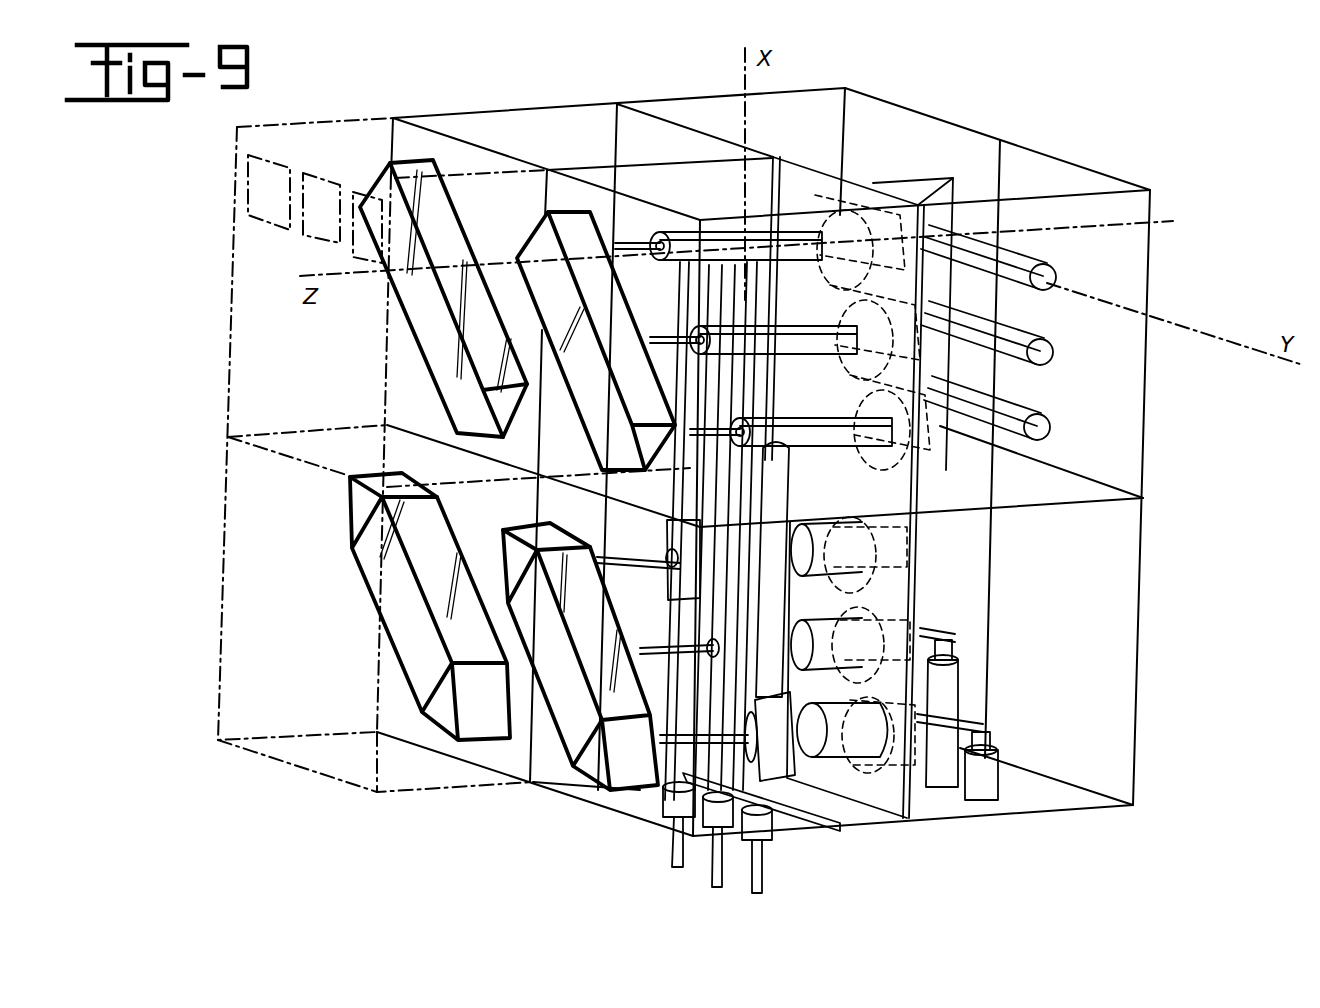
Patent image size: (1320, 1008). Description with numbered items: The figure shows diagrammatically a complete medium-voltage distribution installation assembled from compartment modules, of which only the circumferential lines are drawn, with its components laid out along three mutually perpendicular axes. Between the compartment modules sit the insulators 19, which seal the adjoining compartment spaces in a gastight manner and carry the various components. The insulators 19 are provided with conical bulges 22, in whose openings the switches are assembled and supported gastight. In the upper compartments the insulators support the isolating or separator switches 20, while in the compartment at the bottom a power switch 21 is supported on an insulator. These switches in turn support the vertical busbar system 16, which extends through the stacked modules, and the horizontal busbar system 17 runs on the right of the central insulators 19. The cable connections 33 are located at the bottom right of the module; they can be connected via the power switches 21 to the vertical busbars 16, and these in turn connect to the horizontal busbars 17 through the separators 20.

The vertical busbar system 16 is at (745, 555).
The horizontal busbar system 17 is at (1033, 417).
The insulator 19 is at (790, 177).
The separator switch 20 is at (750, 325).
The power switch 21 is at (790, 573).
The conical bulge 22 is at (883, 357).
The cable connection 33 is at (917, 567).